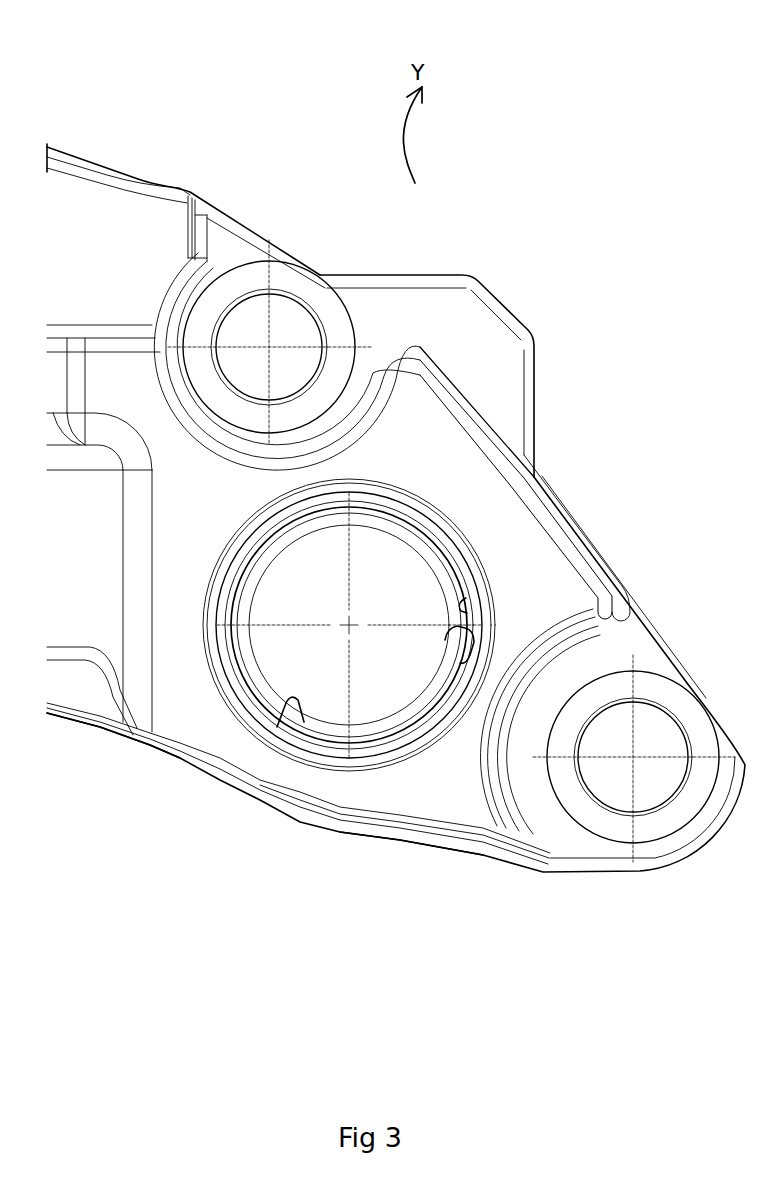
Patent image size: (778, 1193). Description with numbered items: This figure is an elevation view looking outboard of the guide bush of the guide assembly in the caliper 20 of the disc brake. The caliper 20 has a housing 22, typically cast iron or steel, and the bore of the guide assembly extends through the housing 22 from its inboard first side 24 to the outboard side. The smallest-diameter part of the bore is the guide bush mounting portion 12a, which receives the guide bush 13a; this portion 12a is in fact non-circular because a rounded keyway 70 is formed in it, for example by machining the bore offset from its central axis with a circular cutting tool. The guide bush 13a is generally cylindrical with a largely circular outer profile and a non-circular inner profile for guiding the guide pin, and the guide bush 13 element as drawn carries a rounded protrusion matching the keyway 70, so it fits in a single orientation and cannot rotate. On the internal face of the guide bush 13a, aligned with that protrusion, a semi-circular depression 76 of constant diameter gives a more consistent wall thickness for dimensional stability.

The caliper 20 is at (386, 470).
The central bore axis 13 is at (457, 454).
The guide bush 13a is at (435, 548).
The keyway 70 is at (462, 605).
The semi-circular depression 76 is at (447, 636).
The guide bush mounting portion 12a is at (290, 700).
The housing 22 is at (97, 728).
The first side 24 is at (440, 808).